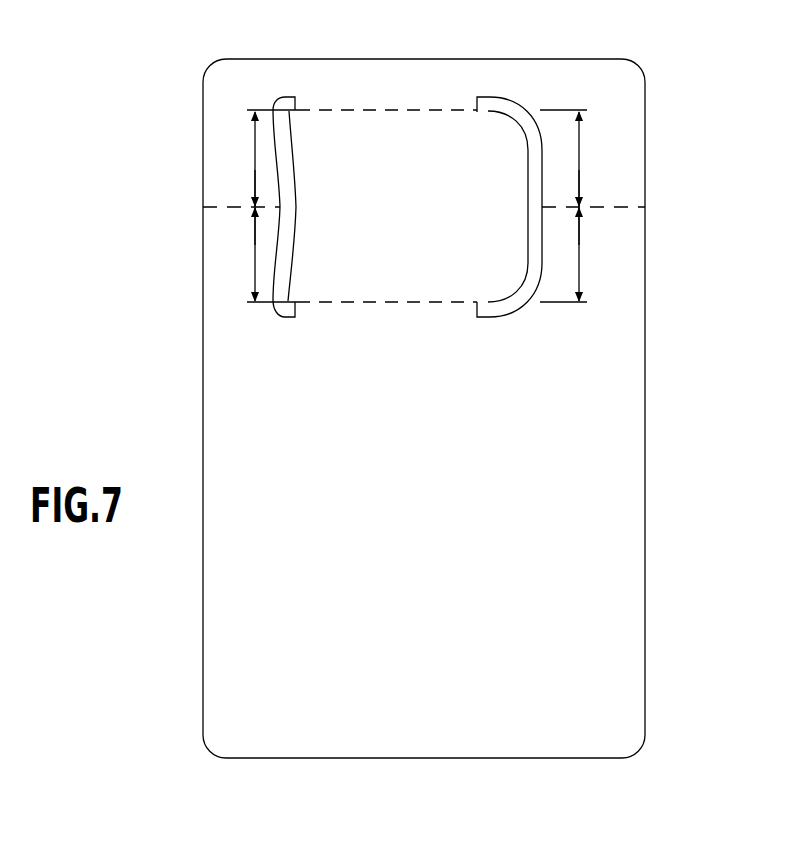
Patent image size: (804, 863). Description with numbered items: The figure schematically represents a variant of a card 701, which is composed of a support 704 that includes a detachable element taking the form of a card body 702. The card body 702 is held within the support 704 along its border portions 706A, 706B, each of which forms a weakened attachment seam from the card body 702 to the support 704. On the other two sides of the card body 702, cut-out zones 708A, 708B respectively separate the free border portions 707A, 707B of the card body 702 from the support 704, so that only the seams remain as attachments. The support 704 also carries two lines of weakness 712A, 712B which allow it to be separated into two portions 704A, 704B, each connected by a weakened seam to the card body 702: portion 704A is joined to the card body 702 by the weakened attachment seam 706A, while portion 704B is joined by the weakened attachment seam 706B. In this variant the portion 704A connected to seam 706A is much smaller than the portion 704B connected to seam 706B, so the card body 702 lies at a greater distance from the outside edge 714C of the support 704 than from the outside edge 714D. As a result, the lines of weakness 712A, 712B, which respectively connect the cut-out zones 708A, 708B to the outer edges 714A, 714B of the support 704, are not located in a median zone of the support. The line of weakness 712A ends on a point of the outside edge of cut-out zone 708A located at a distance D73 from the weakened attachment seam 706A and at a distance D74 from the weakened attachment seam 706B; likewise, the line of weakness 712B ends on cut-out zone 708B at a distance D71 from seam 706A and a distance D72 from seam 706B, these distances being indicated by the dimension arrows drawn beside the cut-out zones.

The card 701 is at (396, 409).
The card body 702 is at (387, 206).
The support 704 is at (522, 210).
The portion of support 704A is at (586, 207).
The portion of support 704B is at (497, 210).
The border portion 706A is at (348, 110).
The border portion 706B is at (348, 303).
The free border portion 707A is at (530, 168).
The free border portion 707B is at (290, 178).
The cut-out zone 708A is at (537, 236).
The cut-out zone 708B is at (282, 257).
The line of weakness 712A is at (622, 207).
The line of weakness 712B is at (228, 205).
The outer edge 714A is at (645, 458).
The outer edge 714B is at (203, 408).
The outside edge 714C is at (342, 758).
The outside edge 714D is at (343, 59).
The distance D71 is at (254, 158).
The distance D72 is at (254, 254).
The distance D73 is at (581, 158).
The distance D74 is at (581, 254).